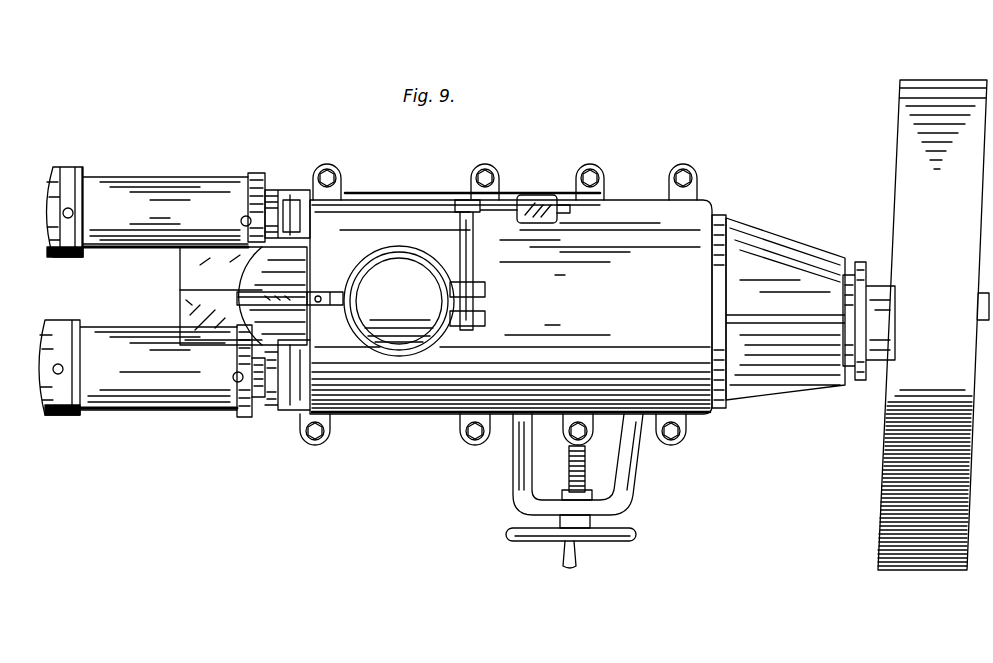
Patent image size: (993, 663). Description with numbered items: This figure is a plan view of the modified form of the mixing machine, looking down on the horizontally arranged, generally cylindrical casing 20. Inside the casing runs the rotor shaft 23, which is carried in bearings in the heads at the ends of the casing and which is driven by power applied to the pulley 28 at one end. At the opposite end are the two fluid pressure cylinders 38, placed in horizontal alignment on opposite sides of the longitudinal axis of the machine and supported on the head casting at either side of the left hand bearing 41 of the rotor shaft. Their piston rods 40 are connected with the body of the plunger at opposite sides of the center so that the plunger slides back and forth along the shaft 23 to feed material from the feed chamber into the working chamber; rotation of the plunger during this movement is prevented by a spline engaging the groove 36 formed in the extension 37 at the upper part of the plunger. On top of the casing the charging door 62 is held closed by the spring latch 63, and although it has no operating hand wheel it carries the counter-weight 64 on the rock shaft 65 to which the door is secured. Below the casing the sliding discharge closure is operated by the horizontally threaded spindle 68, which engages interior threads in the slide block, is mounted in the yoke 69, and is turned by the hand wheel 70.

The casing 20 is at (506, 304).
The shaft 23 is at (868, 362).
The pulley 28 is at (892, 515).
The groove 36 is at (232, 268).
The extension 37 is at (240, 318).
The fluid pressure cylinders 38 is at (135, 412).
The piston rods 40 is at (291, 395).
The left hand bearing 41 is at (195, 292).
The charging door 62 is at (382, 284).
The spring latch 63 is at (337, 306).
The counter-weight 64 is at (553, 198).
The rock shaft 65 is at (474, 272).
The threaded spindle 68 is at (565, 470).
The yoke 69 is at (635, 480).
The hand wheel 70 is at (615, 537).